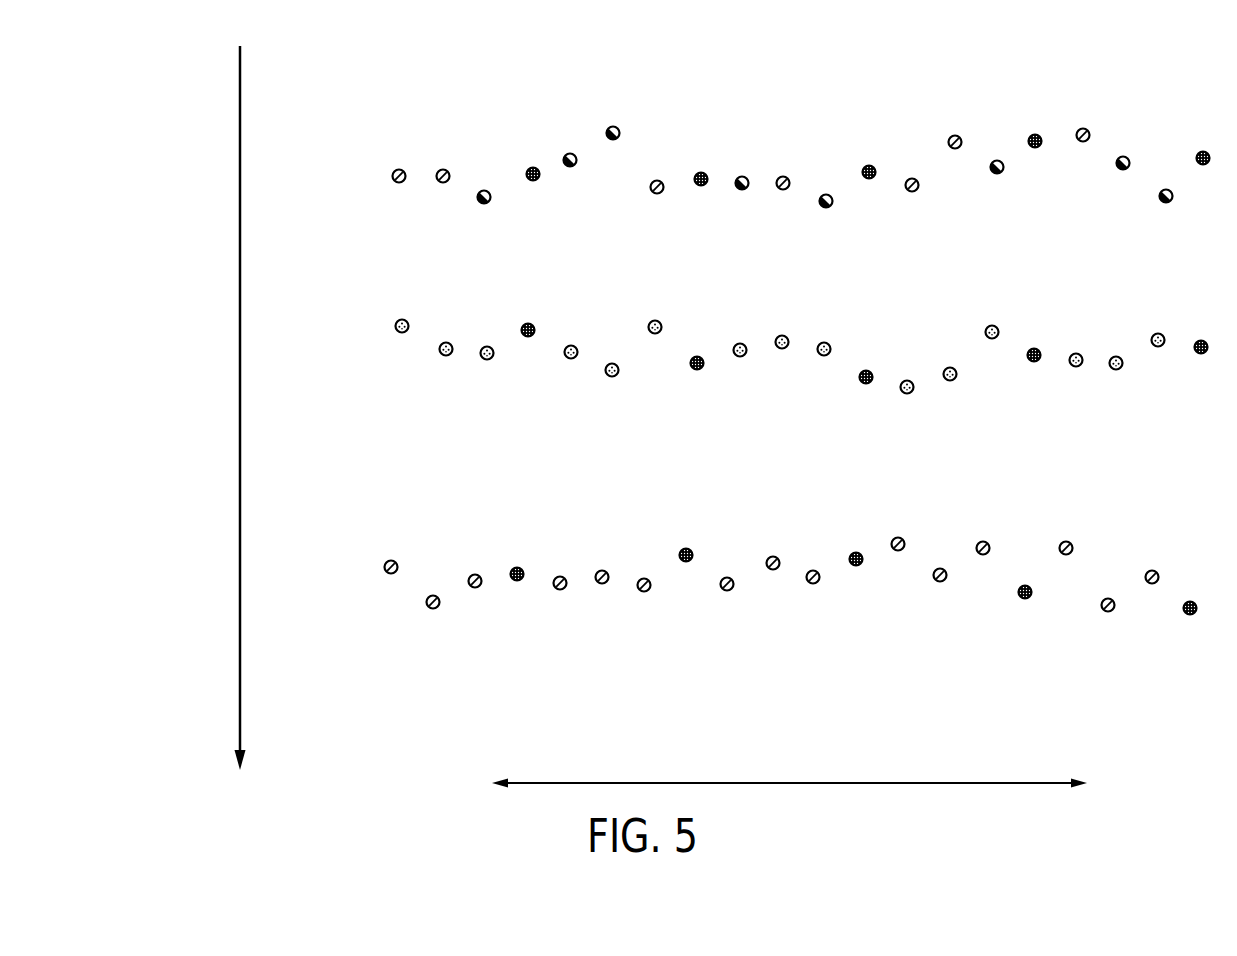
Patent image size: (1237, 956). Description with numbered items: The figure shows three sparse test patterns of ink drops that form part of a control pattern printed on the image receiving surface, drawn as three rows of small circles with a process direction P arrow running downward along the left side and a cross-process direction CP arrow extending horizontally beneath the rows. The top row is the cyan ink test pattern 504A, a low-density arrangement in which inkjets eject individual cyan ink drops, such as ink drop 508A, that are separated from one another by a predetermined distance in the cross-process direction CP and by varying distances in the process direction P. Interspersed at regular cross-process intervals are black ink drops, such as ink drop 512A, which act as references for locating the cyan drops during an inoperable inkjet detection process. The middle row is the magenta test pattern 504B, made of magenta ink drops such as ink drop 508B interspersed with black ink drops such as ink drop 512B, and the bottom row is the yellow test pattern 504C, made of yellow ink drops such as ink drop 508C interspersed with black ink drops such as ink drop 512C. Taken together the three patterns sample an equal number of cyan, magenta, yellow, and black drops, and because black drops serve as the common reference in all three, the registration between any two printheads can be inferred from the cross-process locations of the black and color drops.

The cyan ink test pattern 504A is at (366, 173).
The magenta ink test pattern 504B is at (366, 323).
The yellow ink test pattern 504C is at (362, 580).
The cyan ink drop 508A is at (445, 168).
The magenta ink drop 508B is at (448, 341).
The yellow ink drop 508C is at (435, 594).
The black ink drop 512A is at (535, 166).
The black ink drop 512B is at (529, 322).
The black ink drop 512C is at (519, 566).
The process direction P is at (240, 383).
The cross-process direction CP is at (800, 783).